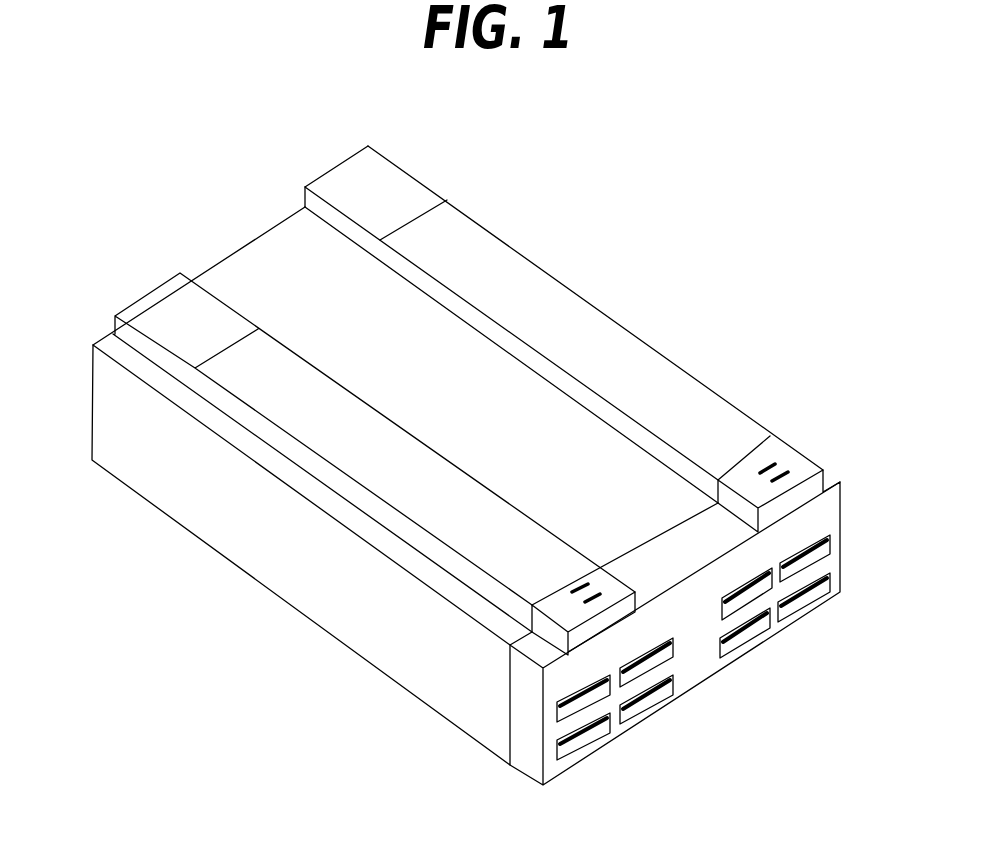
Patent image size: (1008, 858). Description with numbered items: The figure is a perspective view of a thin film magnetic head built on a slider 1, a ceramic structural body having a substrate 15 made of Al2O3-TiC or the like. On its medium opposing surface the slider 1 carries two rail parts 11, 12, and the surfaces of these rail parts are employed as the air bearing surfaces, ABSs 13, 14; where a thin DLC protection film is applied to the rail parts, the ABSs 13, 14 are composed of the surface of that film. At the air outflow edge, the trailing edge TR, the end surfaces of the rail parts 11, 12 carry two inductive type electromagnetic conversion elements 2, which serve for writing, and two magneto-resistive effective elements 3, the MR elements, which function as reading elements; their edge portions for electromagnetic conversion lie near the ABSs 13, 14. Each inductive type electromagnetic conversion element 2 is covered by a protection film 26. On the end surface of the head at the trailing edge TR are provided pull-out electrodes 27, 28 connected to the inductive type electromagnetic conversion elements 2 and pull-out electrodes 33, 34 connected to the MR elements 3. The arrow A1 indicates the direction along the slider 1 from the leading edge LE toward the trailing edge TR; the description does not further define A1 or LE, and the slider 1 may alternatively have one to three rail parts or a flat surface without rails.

The slider 1 is at (172, 542).
The inductive type electromagnetic conversion element 2 is at (600, 593).
The magneto-resistive effective element 3 is at (587, 588).
The rail part 11 is at (115, 328).
The rail part 12 is at (305, 198).
The ABS 13 is at (400, 425).
The ABS 14 is at (558, 283).
The substrate 15 is at (318, 606).
The protection film 26 is at (517, 732).
The pull-out electrode 27 is at (645, 700).
The pull-out electrode 28 is at (663, 650).
The pull-out electrode 33 is at (568, 710).
The pull-out electrode 34 is at (592, 733).
The direction arrow A1 is at (268, 251).
The leading edge LE is at (126, 281).
The air outflow edge (trailing edge) TR is at (783, 509).